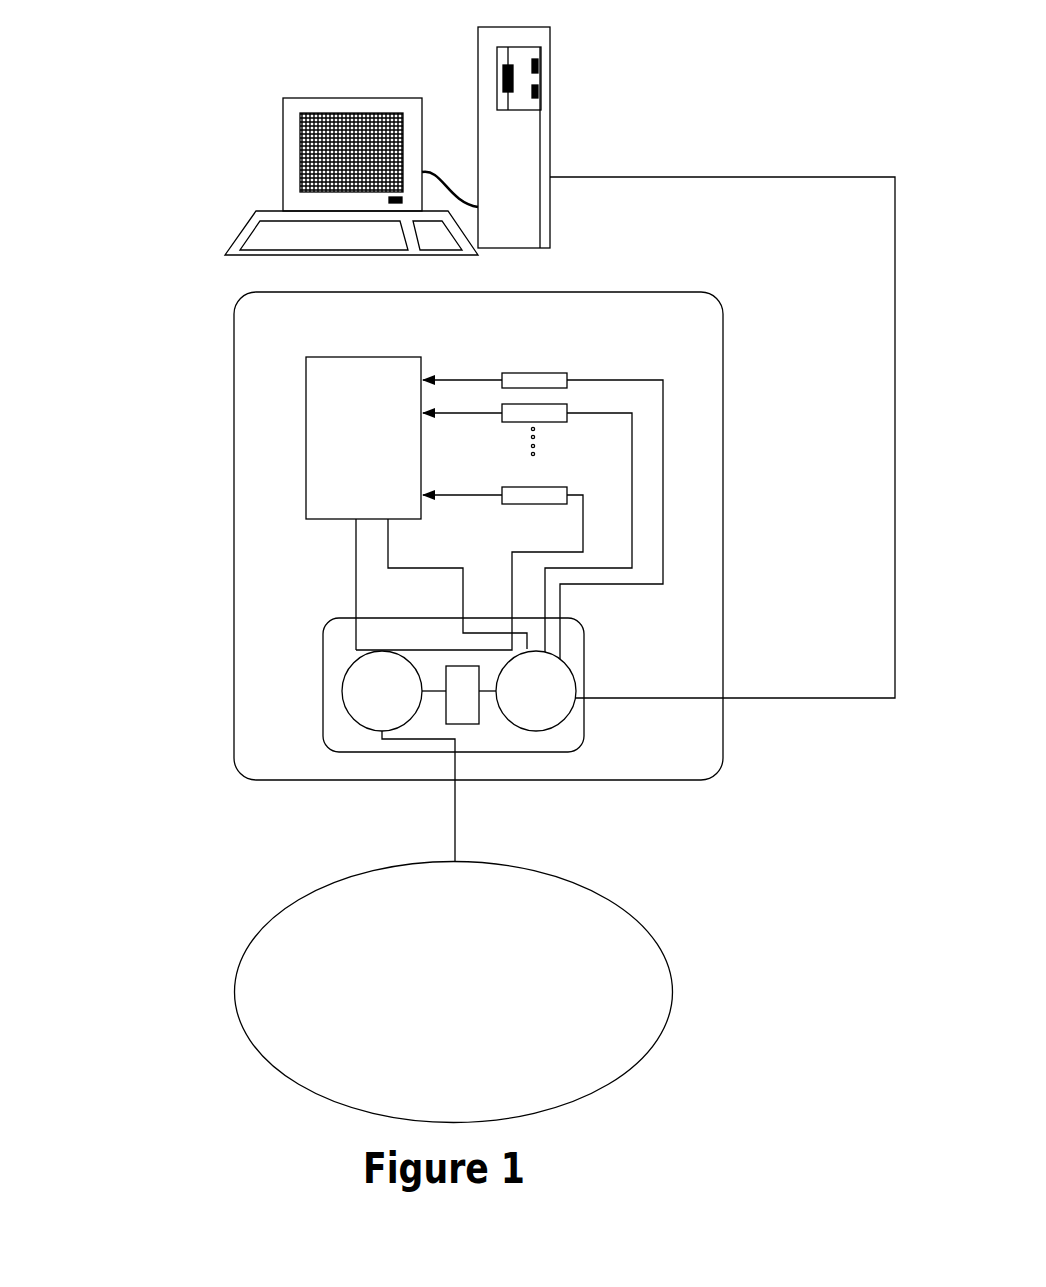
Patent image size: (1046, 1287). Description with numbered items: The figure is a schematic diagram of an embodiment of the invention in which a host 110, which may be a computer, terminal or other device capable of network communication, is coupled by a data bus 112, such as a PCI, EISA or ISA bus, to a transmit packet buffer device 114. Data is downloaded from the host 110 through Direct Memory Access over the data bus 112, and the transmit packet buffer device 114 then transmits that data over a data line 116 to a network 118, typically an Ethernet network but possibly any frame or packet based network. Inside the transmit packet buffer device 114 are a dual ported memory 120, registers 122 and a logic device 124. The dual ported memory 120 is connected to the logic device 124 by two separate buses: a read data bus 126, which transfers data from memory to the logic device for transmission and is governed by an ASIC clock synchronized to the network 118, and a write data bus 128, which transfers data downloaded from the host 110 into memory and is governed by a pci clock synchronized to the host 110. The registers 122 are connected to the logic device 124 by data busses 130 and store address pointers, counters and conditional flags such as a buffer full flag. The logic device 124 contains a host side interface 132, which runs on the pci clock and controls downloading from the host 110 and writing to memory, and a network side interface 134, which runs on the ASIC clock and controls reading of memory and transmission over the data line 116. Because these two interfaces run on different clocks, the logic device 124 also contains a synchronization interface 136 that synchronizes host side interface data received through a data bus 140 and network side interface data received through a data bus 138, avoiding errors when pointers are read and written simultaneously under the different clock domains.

The host 110 is at (281, 152).
The data bus 112 is at (666, 176).
The transmit packet buffer device 114 is at (725, 751).
The data line 116 is at (453, 795).
The network 118 is at (667, 957).
The dual ported memory 120 is at (304, 437).
The registers 122 is at (554, 370).
The logic device 124 is at (321, 690).
The read data bus 126 is at (354, 578).
The write data bus 128 is at (386, 551).
The data busses 130 is at (635, 486).
The host side interface 132 is at (577, 679).
The network side interface 134 is at (349, 719).
The synchronization interface 136 is at (463, 727).
The data bus 138 is at (429, 695).
The data bus 140 is at (486, 700).